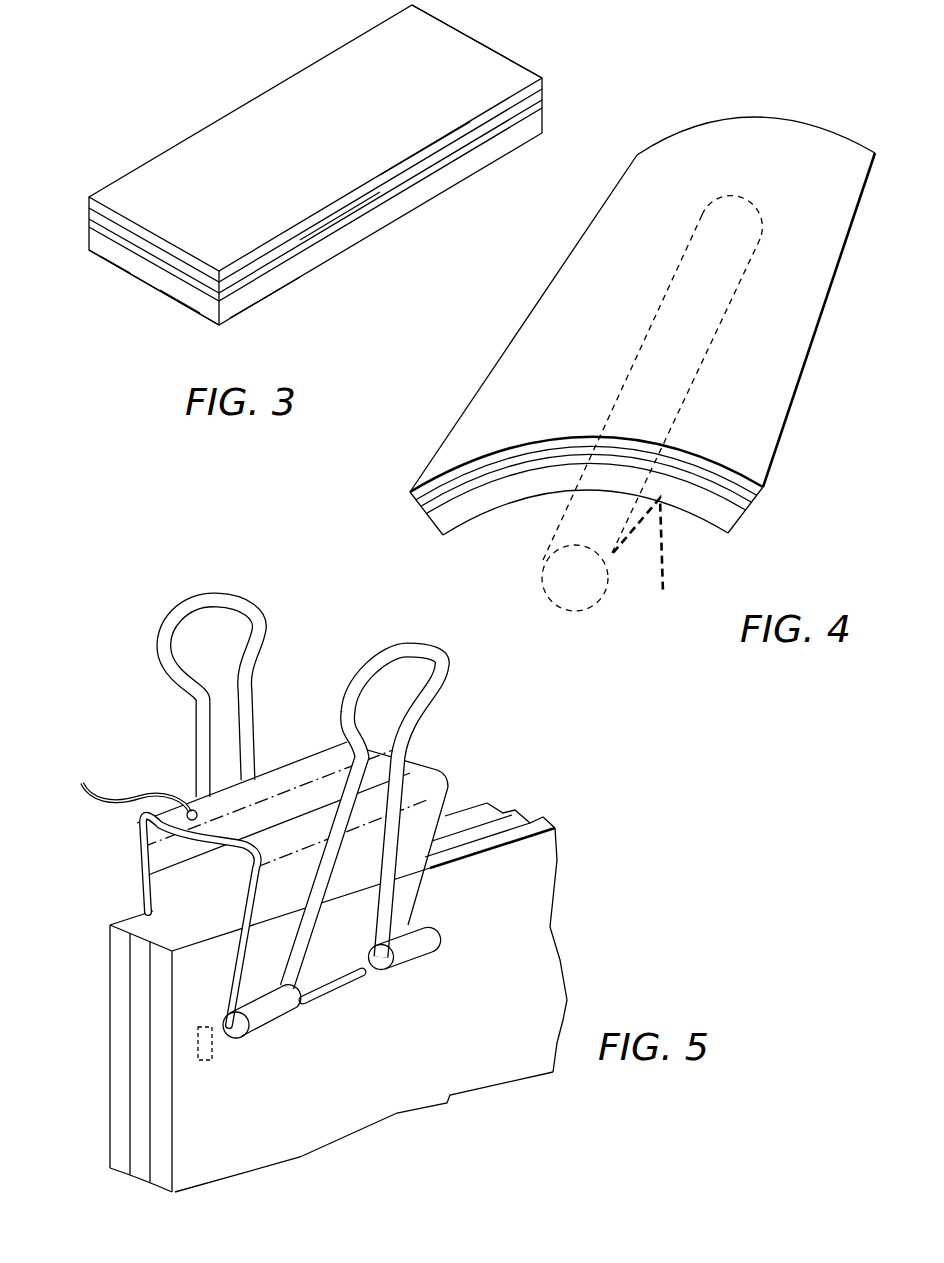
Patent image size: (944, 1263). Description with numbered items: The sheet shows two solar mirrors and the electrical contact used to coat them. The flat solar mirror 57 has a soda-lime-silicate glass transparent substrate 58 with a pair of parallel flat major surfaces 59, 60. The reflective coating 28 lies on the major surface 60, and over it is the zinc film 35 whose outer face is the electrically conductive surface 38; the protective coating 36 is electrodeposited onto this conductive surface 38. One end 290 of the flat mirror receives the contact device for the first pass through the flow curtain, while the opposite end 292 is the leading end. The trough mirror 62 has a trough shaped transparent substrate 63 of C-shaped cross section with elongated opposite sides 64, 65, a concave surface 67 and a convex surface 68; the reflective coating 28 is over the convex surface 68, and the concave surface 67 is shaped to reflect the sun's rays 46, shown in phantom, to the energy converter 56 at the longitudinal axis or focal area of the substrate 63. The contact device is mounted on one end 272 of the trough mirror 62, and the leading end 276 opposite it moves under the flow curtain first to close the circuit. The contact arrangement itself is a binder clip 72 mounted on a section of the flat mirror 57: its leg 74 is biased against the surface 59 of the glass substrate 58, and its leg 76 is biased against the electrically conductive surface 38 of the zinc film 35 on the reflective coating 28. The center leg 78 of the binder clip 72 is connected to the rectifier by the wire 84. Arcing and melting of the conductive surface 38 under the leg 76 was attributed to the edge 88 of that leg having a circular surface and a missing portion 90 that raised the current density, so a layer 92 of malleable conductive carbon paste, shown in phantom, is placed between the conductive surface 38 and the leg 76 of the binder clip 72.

In FIG. 3, the reflective coating 28 is at (88, 224).
In FIG. 4, the reflective coating 28 is at (415, 527).
In FIG. 5, the reflective coating 28 is at (143, 1098).
In FIG. 3, the zinc film 35 is at (89, 209).
In FIG. 4, the zinc film 35 is at (415, 515).
In FIG. 5, the zinc film 35 is at (160, 1153).
In FIG. 3, the protective coating 36 is at (316, 139).
In FIG. 4, the protective coating 36 is at (410, 502).
In FIG. 3, the electrically conductive surface 38 is at (165, 247).
In FIG. 5, the electrically conductive surface 38 is at (443, 1082).
In FIG. 4, the sun's rays 46 is at (663, 565).
In FIG. 4, the energy converter 56 is at (550, 597).
In FIG. 3, the flat solar mirror 57 is at (183, 111).
In FIG. 5, the flat solar mirror 57 is at (409, 1136).
In FIG. 3, the transparent substrate 58 is at (265, 288).
In FIG. 5, the transparent substrate 58 is at (122, 1055).
In FIG. 3, the major surface 59 is at (132, 280).
In FIG. 5, the major surface 59 is at (110, 1010).
In FIG. 3, the major surface 60 is at (107, 240).
In FIG. 4, the trough mirror 62 is at (701, 104).
In FIG. 4, the trough shaped transparent substrate 63 is at (713, 503).
In FIG. 4, the elongated side 64 is at (743, 520).
In FIG. 4, the elongated side 65 is at (433, 532).
In FIG. 4, the concave surface 67 is at (473, 515).
In FIG. 4, the convex surface 68 is at (490, 480).
In FIG. 3, the binder clip 72 is at (343, 223).
In FIG. 5, the binder clip 72 is at (149, 754).
In FIG. 5, the leg 74 is at (132, 888).
In FIG. 3, the leg 76 is at (417, 160).
In FIG. 5, the leg 76 is at (410, 888).
In FIG. 5, the center leg 78 is at (295, 773).
In FIG. 5, the wire 84 is at (100, 820).
In FIG. 5, the edge 88 is at (267, 1010).
In FIG. 5, the missing portion 90 is at (357, 967).
In FIG. 5, the layer 92 is at (217, 1057).
In FIG. 4, the end 272 is at (759, 140).
In FIG. 4, the leading end 276 is at (548, 460).
In FIG. 3, the end 290 is at (465, 35).
In FIG. 3, the end 292 is at (181, 290).